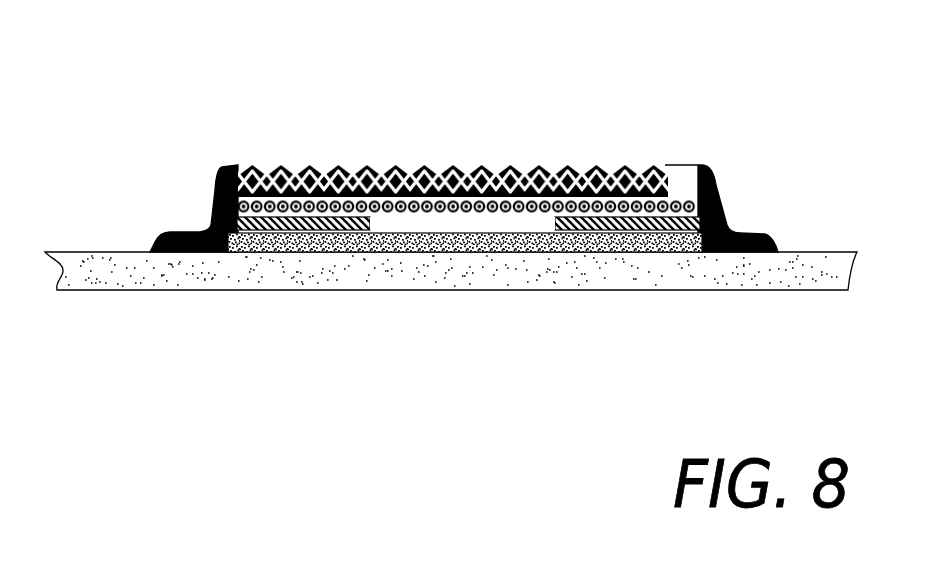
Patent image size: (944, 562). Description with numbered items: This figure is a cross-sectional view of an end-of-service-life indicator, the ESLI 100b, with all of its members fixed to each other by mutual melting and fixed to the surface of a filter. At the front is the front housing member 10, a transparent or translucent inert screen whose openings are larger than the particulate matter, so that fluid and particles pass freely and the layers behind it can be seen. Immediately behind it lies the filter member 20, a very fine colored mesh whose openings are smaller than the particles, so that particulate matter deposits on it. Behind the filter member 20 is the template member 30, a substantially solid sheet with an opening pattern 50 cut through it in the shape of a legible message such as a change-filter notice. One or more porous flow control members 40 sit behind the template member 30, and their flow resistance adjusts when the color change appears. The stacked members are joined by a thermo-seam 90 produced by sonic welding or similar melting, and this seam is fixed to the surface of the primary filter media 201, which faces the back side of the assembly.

The ESLI 100b is at (231, 68).
The front housing member 10 is at (465, 208).
The filter member 20 is at (440, 168).
The template member 30 is at (307, 222).
The flow control member 40 is at (455, 250).
The opening pattern 50 is at (476, 224).
The thermo-seam 90 is at (212, 222).
The primary filter media 201 is at (800, 284).